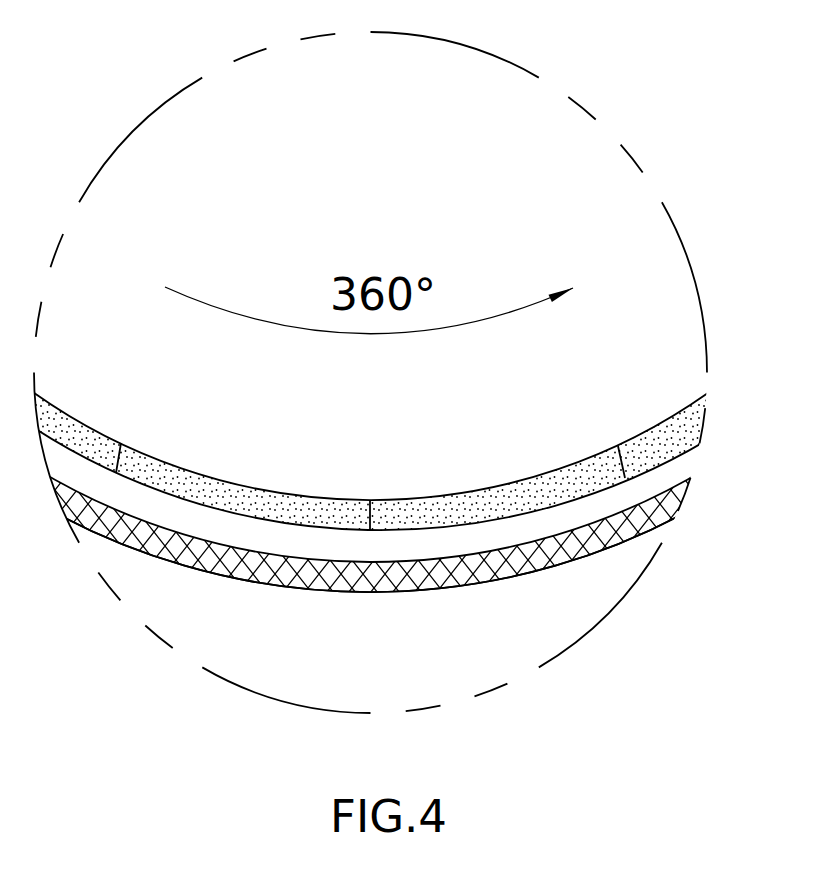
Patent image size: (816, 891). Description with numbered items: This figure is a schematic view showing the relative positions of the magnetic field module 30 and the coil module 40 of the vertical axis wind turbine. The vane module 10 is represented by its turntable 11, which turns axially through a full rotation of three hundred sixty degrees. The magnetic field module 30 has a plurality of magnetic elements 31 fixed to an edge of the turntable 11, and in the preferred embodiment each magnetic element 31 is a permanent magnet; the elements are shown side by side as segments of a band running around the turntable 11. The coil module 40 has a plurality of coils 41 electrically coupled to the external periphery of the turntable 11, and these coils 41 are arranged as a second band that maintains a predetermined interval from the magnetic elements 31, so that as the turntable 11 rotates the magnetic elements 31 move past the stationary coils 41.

The vane module 10 is at (665, 148).
The turntable 11 is at (668, 320).
The magnetic field module 30 is at (438, 555).
The magnetic element 31 is at (393, 517).
The coil module 40 is at (193, 510).
The coil 41 is at (317, 577).